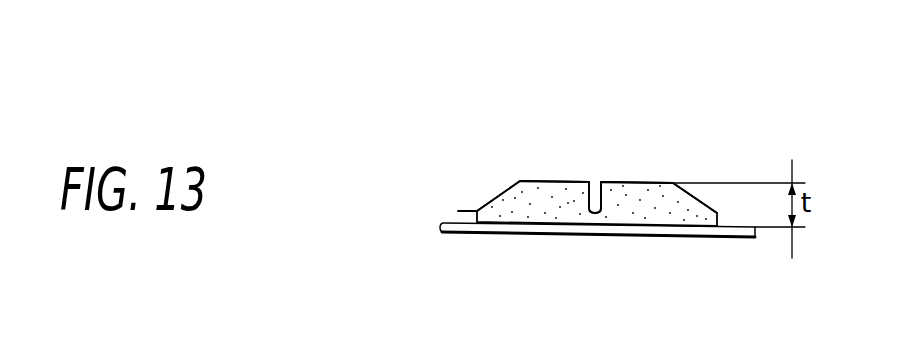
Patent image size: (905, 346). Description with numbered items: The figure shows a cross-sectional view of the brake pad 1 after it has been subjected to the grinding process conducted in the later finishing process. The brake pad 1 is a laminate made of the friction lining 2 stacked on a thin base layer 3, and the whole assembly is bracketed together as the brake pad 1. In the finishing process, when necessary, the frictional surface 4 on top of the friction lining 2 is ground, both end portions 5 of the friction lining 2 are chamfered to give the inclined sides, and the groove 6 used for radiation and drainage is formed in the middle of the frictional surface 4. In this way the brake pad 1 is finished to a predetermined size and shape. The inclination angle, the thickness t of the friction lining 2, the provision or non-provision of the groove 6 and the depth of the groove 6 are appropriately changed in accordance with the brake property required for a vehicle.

The brake pad 1 is at (359, 155).
The friction lining 2 is at (458, 211).
The base sheet layer 3 is at (440, 228).
The frictional surface 4 is at (634, 183).
The end portions 5 is at (498, 197).
The groove 6 is at (597, 195).